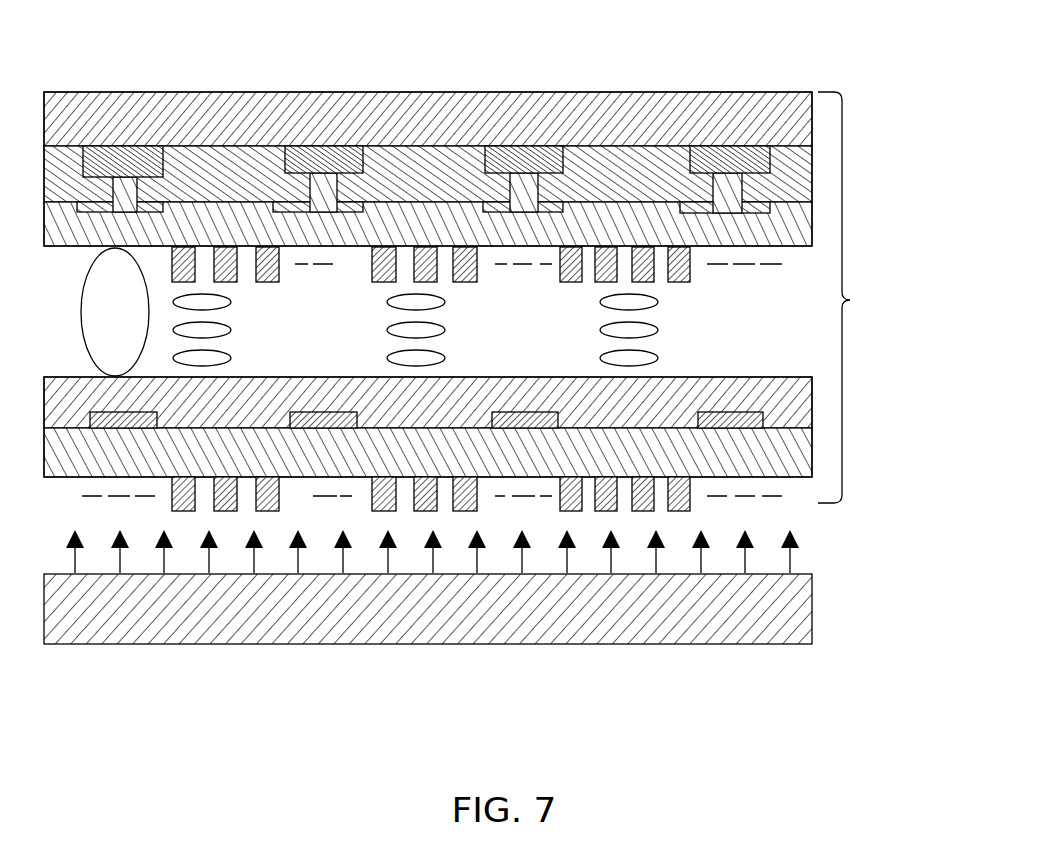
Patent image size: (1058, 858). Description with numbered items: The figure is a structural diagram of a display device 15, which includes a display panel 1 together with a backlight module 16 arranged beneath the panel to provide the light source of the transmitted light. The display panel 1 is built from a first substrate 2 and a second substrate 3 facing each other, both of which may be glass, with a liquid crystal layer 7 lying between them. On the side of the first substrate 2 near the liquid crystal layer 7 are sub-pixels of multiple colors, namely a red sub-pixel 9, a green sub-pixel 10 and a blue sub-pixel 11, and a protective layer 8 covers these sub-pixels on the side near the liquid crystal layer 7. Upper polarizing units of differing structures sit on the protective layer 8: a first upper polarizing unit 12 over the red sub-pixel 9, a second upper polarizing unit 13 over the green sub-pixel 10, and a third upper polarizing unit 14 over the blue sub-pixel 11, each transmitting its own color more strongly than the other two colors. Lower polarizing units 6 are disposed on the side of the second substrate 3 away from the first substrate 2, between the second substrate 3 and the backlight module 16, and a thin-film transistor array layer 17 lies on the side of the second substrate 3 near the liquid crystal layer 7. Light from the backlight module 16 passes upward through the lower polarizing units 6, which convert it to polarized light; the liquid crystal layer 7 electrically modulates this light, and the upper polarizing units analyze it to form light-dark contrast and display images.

The display panel 1 is at (848, 297).
The first substrate 2 is at (708, 117).
The second substrate 3 is at (303, 443).
The lower polarizing units 6 is at (613, 510).
The liquid crystal layer 7 is at (416, 355).
The protective layer 8 is at (142, 248).
The red sub-pixel 9 is at (607, 178).
The green sub-pixel 10 is at (392, 172).
The blue sub-pixel 11 is at (210, 200).
The first upper polarizing unit 12 is at (655, 262).
The second upper polarizing unit 13 is at (440, 262).
The third upper polarizing unit 14 is at (273, 243).
The display device 15 is at (80, 648).
The backlight module 16 is at (188, 598).
The thin-film transistor array layer 17 is at (686, 418).